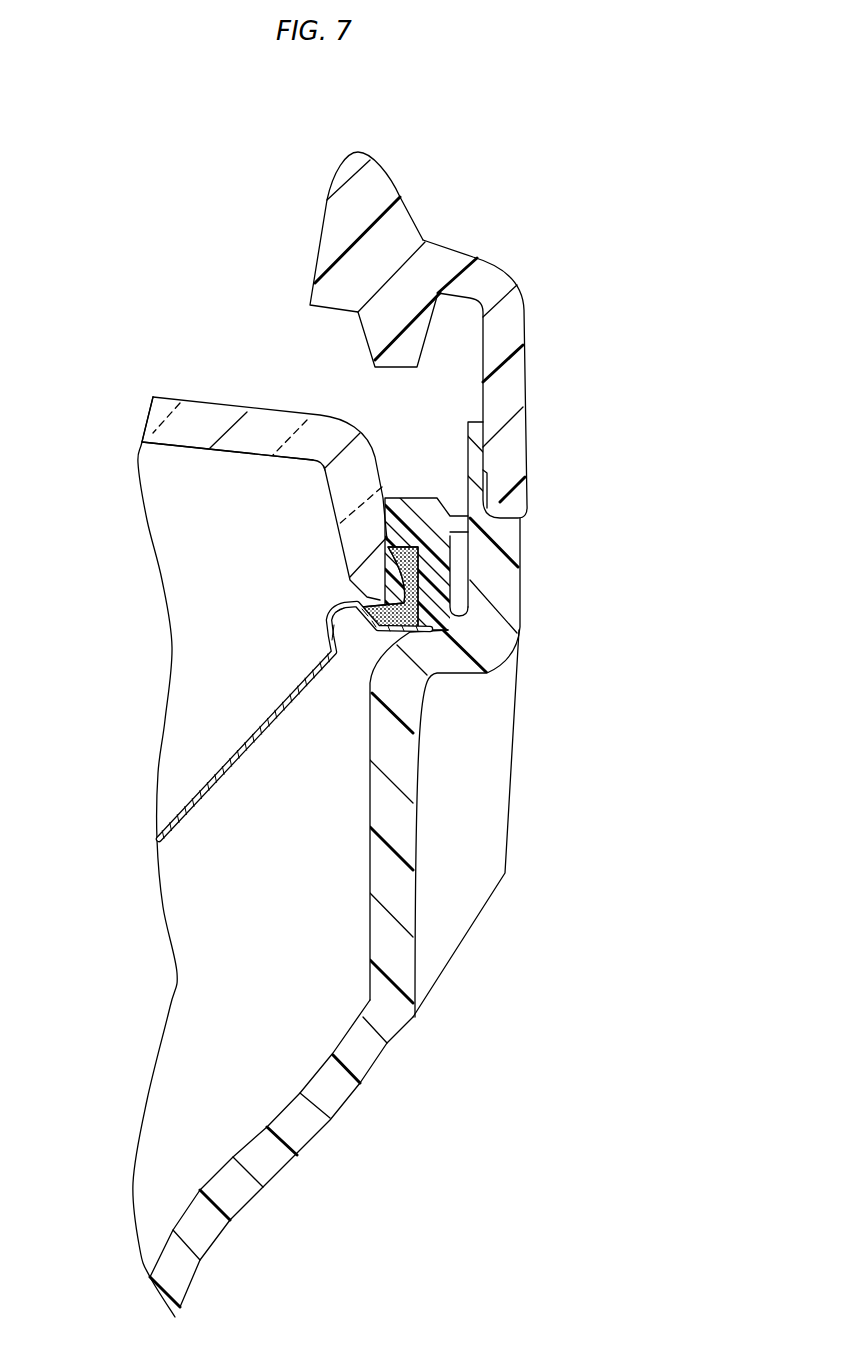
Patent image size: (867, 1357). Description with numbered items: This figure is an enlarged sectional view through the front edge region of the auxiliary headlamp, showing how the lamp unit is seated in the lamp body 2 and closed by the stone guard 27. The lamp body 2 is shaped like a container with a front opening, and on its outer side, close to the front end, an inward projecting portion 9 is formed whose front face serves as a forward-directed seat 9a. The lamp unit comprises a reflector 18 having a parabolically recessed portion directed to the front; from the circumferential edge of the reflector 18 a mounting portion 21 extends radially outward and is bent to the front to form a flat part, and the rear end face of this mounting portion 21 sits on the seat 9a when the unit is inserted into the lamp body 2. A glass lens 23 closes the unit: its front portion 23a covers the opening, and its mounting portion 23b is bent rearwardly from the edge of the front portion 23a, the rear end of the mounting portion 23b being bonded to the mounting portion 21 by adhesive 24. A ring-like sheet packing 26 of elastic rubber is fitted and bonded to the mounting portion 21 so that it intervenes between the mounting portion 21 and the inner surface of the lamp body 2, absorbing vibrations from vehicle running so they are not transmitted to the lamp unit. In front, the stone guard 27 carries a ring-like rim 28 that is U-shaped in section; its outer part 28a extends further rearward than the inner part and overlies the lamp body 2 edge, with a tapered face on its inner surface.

The lamp body 2 is at (343, 1107).
The inward projecting portion 9 is at (390, 690).
The seat 9a is at (450, 607).
The reflector 18 is at (193, 810).
The mounting portion 21 is at (372, 632).
The lens 23 is at (215, 403).
The front portion 23a is at (200, 447).
The mounting portion 23b is at (348, 552).
The adhesive 24 is at (370, 603).
The sheet packing 26 is at (427, 523).
The stone guard 27 is at (445, 245).
The rim 28 is at (507, 267).
The outer part 28a is at (523, 333).